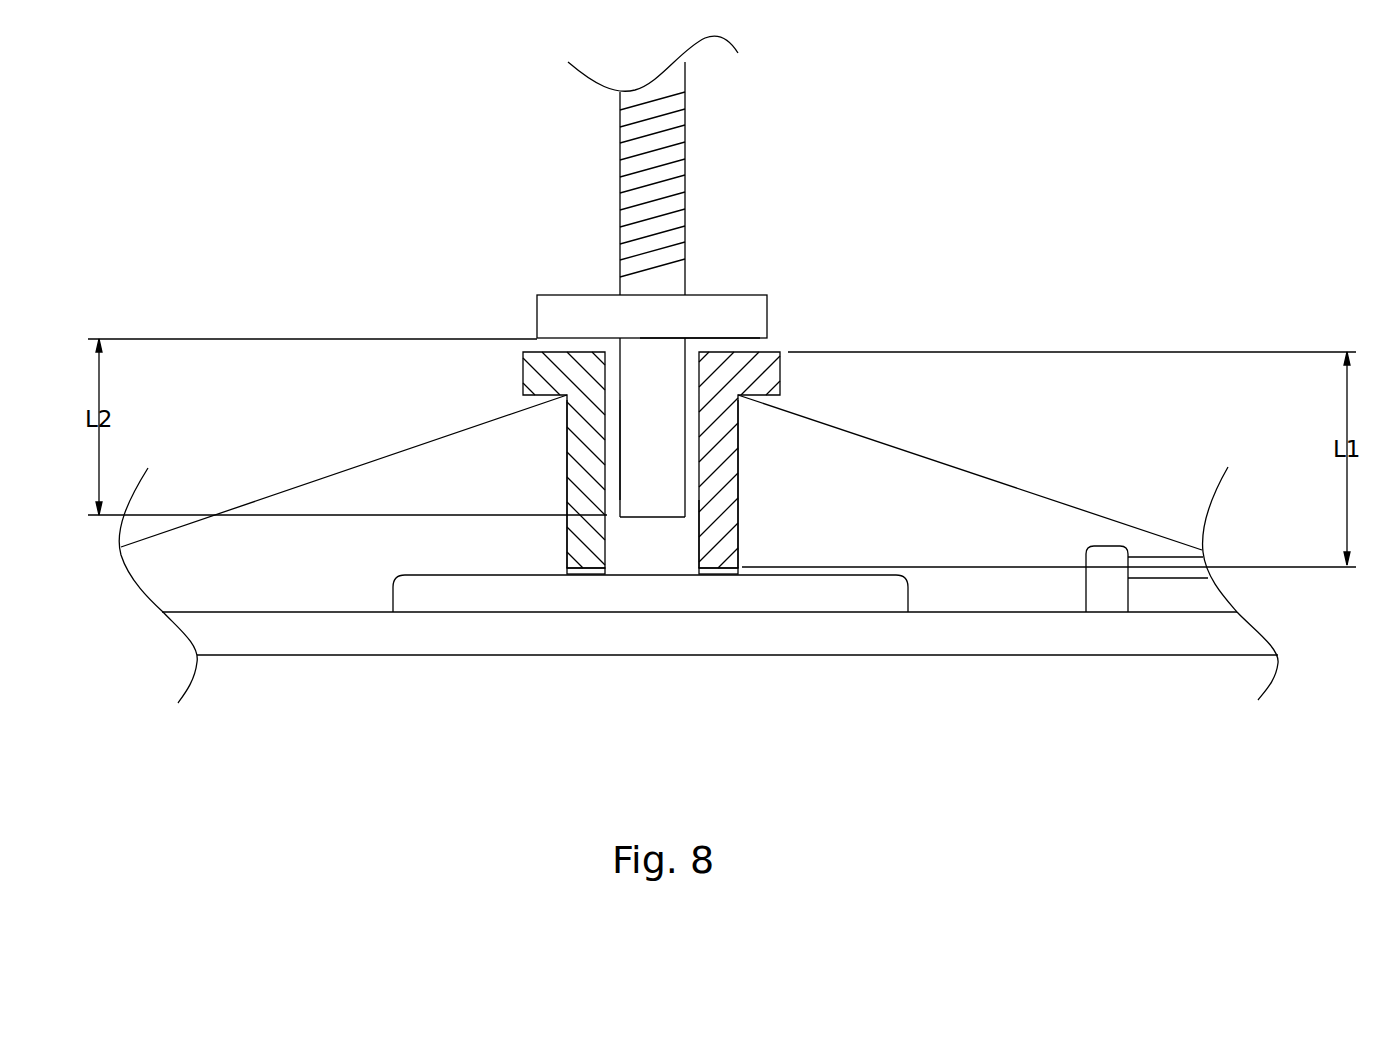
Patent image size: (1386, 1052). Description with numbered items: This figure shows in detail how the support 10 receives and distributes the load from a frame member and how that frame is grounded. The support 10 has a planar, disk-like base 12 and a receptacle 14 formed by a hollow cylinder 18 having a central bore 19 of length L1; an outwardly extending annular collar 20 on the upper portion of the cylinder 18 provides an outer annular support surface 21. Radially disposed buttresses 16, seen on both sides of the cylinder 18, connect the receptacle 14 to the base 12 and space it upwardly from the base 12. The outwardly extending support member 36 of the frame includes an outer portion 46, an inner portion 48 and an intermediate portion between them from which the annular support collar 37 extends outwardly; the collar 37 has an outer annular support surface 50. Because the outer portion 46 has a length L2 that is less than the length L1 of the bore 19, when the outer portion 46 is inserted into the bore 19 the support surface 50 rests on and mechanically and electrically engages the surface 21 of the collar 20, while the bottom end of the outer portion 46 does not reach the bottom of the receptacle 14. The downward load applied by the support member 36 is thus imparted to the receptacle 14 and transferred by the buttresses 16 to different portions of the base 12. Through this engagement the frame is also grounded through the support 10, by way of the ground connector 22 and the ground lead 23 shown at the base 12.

The support 10 is at (898, 800).
The base 12 is at (698, 612).
The receptacle 14 is at (442, 559).
The buttresses 16 is at (343, 467).
The hollow cylinder 18 is at (886, 571).
The central bore 19 is at (606, 601).
The annular collar 20 is at (786, 377).
The outer annular support surface 21 is at (532, 353).
The ground connector 22 is at (1209, 410).
The ground lead 23 is at (1209, 654).
The outwardly extending support member 36 is at (1036, 123).
The annular support collar 37 is at (770, 317).
The outer portion 46 is at (490, 590).
The inner portion 48 is at (697, 276).
The outer annular support surface 50 is at (700, 533).